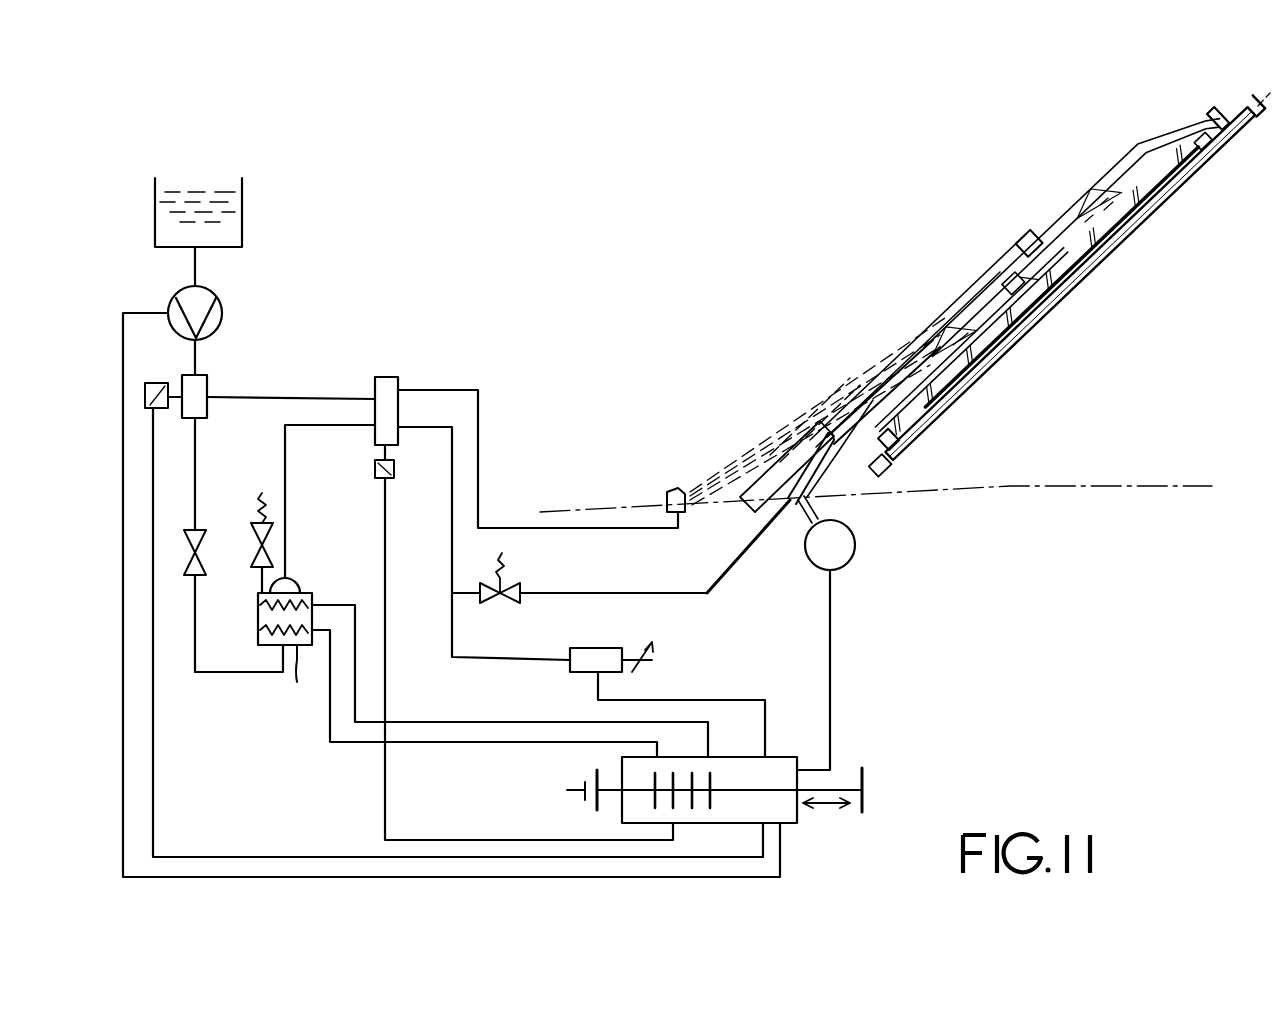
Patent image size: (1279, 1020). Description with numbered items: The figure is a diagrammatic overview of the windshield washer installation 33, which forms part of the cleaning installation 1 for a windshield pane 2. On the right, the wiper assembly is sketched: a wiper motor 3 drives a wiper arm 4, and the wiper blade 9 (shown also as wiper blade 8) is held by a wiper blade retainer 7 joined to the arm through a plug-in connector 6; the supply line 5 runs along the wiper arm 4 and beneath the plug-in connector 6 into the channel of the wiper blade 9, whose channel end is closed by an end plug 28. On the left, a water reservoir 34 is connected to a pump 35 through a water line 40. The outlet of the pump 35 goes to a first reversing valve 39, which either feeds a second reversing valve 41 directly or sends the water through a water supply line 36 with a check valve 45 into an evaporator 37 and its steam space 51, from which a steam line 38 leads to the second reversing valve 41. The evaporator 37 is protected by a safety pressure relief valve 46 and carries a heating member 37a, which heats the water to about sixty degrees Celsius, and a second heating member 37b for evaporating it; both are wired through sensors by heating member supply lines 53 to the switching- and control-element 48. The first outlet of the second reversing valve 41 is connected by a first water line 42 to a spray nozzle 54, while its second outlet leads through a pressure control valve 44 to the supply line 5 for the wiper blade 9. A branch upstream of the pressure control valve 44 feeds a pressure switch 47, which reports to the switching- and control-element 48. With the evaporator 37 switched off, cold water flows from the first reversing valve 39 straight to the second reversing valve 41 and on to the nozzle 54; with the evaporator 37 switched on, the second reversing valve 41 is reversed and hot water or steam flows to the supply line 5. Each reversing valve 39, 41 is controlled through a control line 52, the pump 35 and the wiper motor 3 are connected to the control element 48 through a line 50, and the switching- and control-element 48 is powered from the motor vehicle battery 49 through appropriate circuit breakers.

The cleaning installation 1 is at (740, 400).
The windshield pane 2 is at (988, 364).
The wiper motor 3 is at (855, 548).
The wiper arm 4 is at (768, 484).
The supply line 5 is at (707, 593).
The plug-in connector 6 is at (1016, 244).
The wiper blade retainer 7 is at (1097, 193).
The wiper blade 8 is at (1216, 116).
The wiper blade 9 is at (916, 426).
The end plug 28 is at (1228, 110).
The windshield washer installation 33 is at (521, 341).
The water reservoir 34 is at (160, 225).
The pump 35 is at (170, 306).
The water supply line 36 is at (237, 675).
The evaporator 37 is at (293, 642).
The heating member 37a is at (296, 604).
The second heating member 37b is at (262, 640).
The steam line 38 is at (262, 590).
The first reversing valve 39 is at (208, 388).
The water line 40 is at (195, 268).
The second reversing valve 41 is at (386, 377).
The first water line 42 is at (539, 528).
The pressure control valve 44 is at (506, 606).
The check valve 45 is at (195, 530).
The safety pressure relief valve 46 is at (262, 522).
The pressure switch 47 is at (578, 650).
The switching- and control-element 48 is at (790, 826).
The motor vehicle battery 49 is at (567, 790).
The line 50 is at (123, 790).
The steam space 51 is at (291, 586).
The control line 52 is at (312, 857).
The heating member supply lines 53 is at (482, 725).
The spray nozzle 54 is at (676, 490).